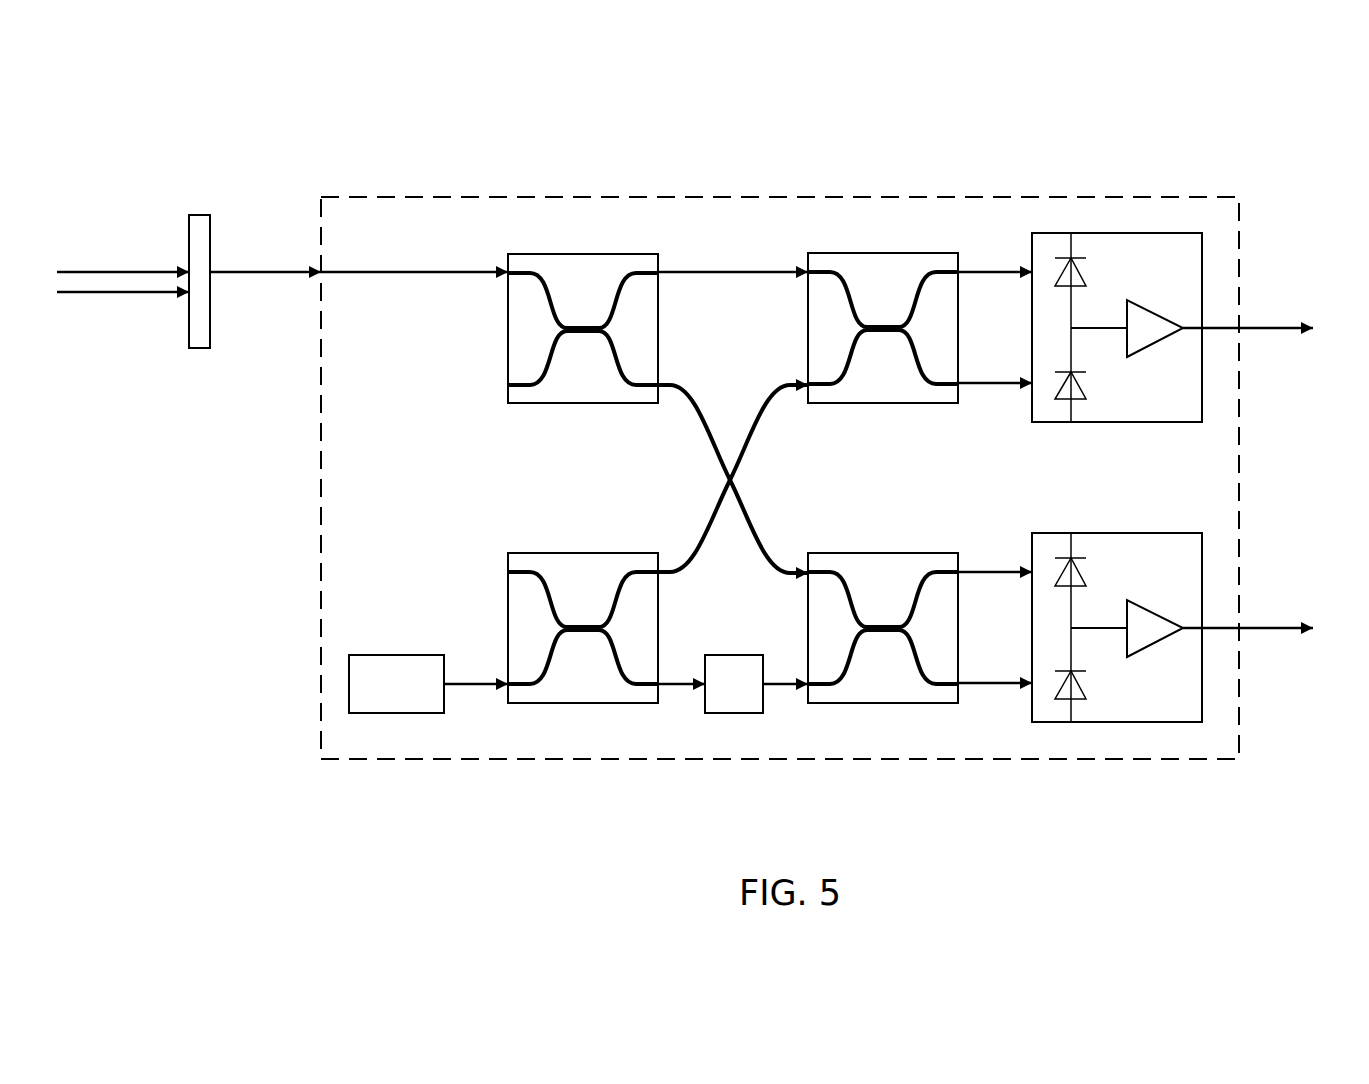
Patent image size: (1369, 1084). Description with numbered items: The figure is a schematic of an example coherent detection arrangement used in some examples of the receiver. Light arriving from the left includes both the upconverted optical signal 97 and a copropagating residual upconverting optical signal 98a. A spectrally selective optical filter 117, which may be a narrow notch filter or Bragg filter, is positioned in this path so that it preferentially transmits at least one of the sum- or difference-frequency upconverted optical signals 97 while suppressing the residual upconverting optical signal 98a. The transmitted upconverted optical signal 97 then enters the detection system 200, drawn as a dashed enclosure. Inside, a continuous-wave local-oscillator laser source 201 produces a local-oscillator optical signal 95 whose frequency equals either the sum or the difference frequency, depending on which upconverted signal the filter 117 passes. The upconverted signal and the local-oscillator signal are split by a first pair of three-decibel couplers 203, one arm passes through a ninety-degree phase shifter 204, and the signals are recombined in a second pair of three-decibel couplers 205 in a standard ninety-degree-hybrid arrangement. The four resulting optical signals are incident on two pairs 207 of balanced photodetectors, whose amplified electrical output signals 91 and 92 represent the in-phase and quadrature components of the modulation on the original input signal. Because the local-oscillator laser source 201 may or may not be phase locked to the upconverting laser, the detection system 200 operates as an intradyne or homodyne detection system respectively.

The residual upconverting optical signal 98a is at (115, 293).
The spectrally selective optical filter 117 is at (200, 328).
The upconverted optical signal 97 is at (410, 270).
The detection system 200 is at (991, 196).
The local-oscillator laser source 201 is at (396, 684).
The local-oscillator optical signal 95 is at (465, 688).
The 3 dB couplers 203 is at (572, 393).
The 90° phase shifter 204 is at (734, 684).
The 3 dB couplers 205 is at (890, 392).
The pairs of balanced photodetectors 207 is at (1118, 409).
The electrical output signal 91 is at (1262, 327).
The electrical output signal 92 is at (1260, 632).